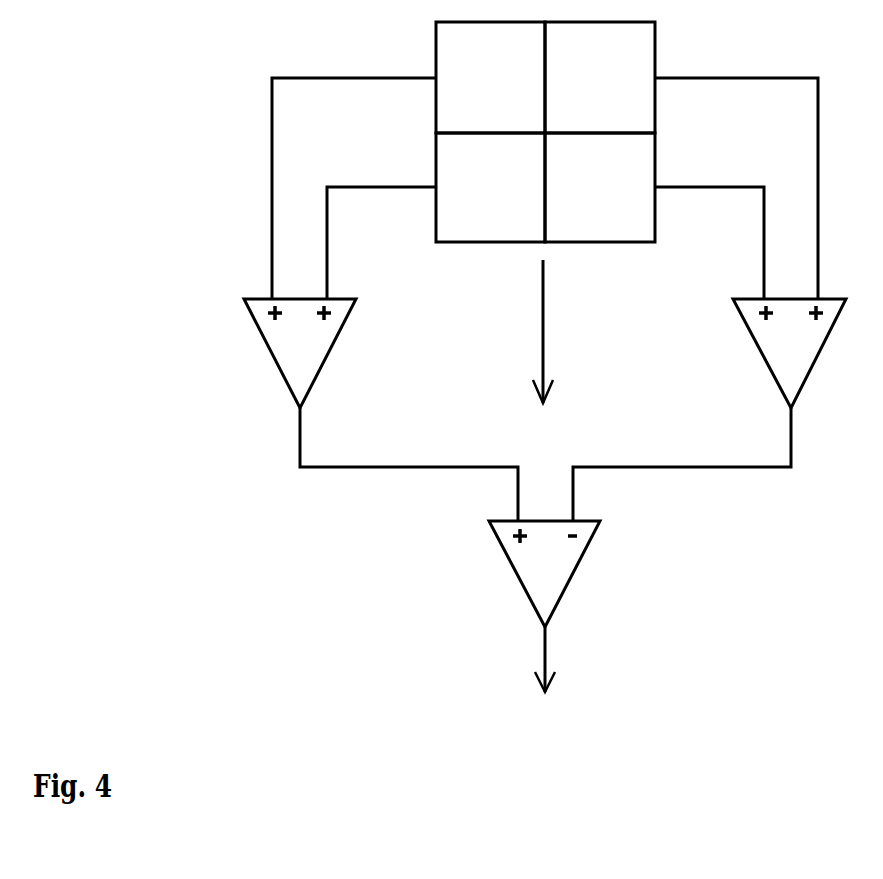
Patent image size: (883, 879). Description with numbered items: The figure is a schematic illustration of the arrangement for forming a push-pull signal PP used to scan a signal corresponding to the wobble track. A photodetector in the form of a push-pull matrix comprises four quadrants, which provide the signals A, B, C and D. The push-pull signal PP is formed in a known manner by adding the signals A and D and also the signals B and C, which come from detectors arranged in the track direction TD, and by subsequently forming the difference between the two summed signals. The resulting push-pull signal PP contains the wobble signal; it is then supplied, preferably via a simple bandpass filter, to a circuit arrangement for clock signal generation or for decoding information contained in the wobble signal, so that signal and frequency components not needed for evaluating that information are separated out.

The signal A is at (490, 77).
The signal B is at (600, 77).
The signal C is at (600, 187).
The signal D is at (490, 187).
The track direction TD is at (569, 331).
The push-pull signal PP is at (545, 680).